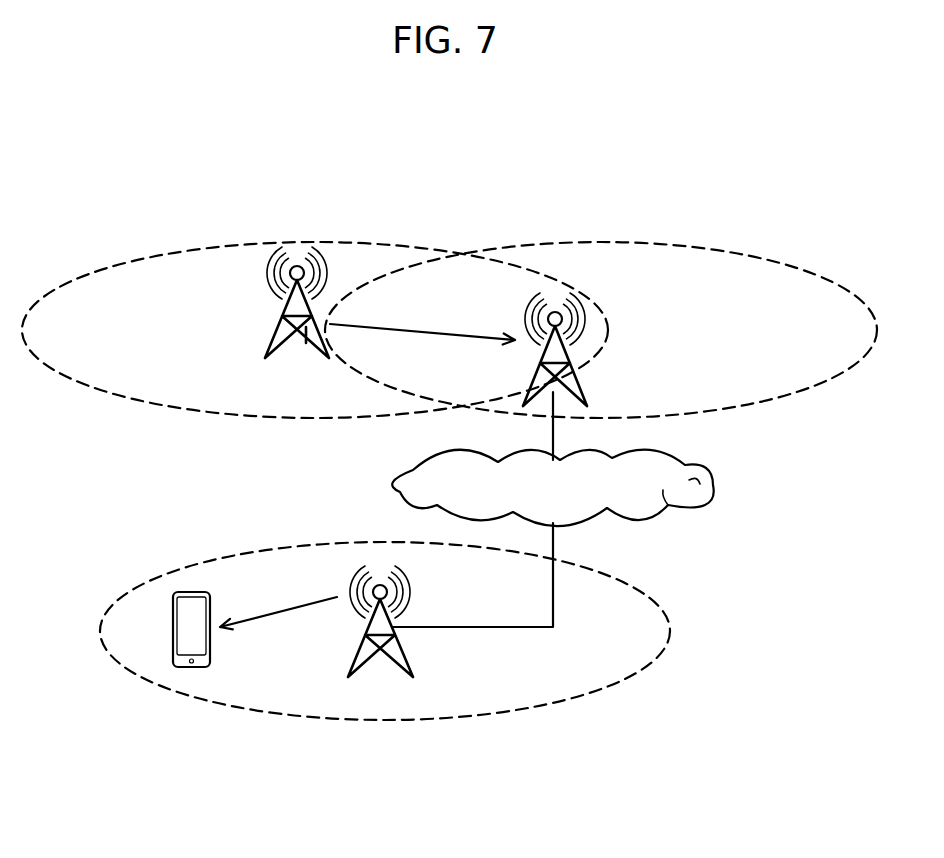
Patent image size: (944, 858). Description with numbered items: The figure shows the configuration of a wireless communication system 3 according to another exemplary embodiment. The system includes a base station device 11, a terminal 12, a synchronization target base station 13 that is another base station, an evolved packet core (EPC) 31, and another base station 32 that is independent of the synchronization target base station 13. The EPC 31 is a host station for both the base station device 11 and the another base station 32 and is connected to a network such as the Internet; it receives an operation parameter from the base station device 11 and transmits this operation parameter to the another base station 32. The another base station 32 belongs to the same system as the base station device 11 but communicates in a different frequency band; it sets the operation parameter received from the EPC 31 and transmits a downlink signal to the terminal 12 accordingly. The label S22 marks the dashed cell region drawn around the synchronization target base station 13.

The wireless communication system 3 is at (511, 168).
The base station device 11 is at (583, 387).
The terminal 12 is at (172, 622).
The synchronization target base station 13 is at (275, 328).
The evolved packet core (EPC) 31 is at (718, 482).
The another base station 32 is at (406, 652).
The step S22 / cell S22 is at (260, 418).